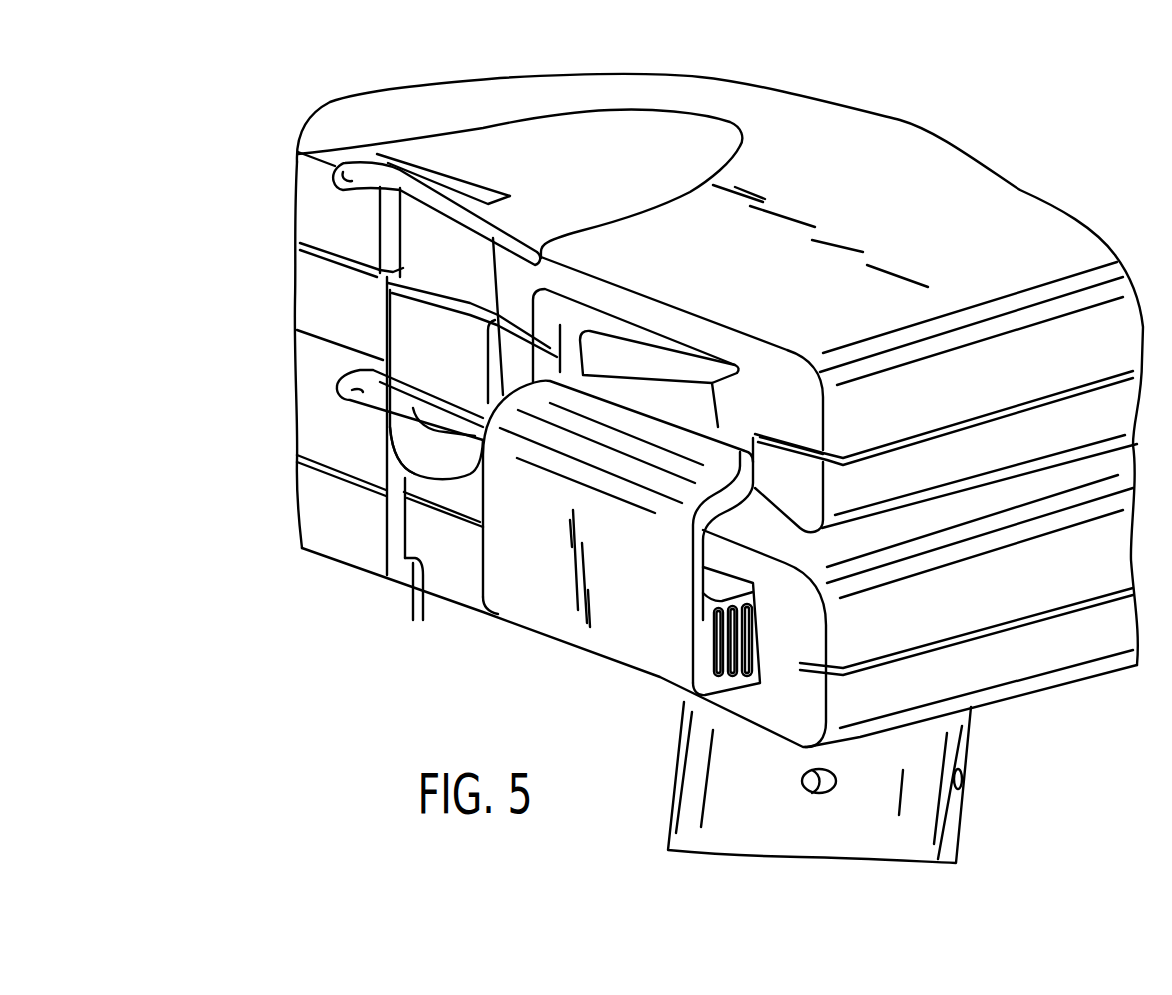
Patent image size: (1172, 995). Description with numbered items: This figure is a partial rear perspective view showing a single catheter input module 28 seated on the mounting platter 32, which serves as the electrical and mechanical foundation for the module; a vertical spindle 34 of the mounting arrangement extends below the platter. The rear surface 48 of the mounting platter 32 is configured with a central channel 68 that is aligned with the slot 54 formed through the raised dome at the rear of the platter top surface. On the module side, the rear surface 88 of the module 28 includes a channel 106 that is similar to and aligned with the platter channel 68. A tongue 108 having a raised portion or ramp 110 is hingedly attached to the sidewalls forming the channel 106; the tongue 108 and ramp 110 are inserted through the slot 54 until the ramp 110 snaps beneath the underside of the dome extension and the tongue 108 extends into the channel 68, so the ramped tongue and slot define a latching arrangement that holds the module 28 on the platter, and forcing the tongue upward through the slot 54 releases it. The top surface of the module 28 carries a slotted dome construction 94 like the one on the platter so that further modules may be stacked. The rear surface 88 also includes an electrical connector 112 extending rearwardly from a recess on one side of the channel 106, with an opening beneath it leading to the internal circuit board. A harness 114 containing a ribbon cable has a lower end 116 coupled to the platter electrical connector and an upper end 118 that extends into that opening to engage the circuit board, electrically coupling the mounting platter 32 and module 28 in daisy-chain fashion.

The catheter input module 28 is at (1070, 247).
The slotted dome construction 94 is at (587, 142).
The channel 106 is at (390, 224).
The rear surface 88 is at (313, 279).
The tongue 108 is at (397, 328).
The slot 54 is at (347, 373).
The ramp 110 is at (413, 426).
The rear surface 48 is at (300, 517).
The central channel 68 is at (423, 622).
The electrical connector 112 is at (655, 348).
The upper end 118 is at (733, 442).
The harness 114 is at (545, 600).
The lower end 116 is at (713, 652).
The mounting platter 32 is at (1013, 700).
The vertical spindle 34 is at (673, 790).